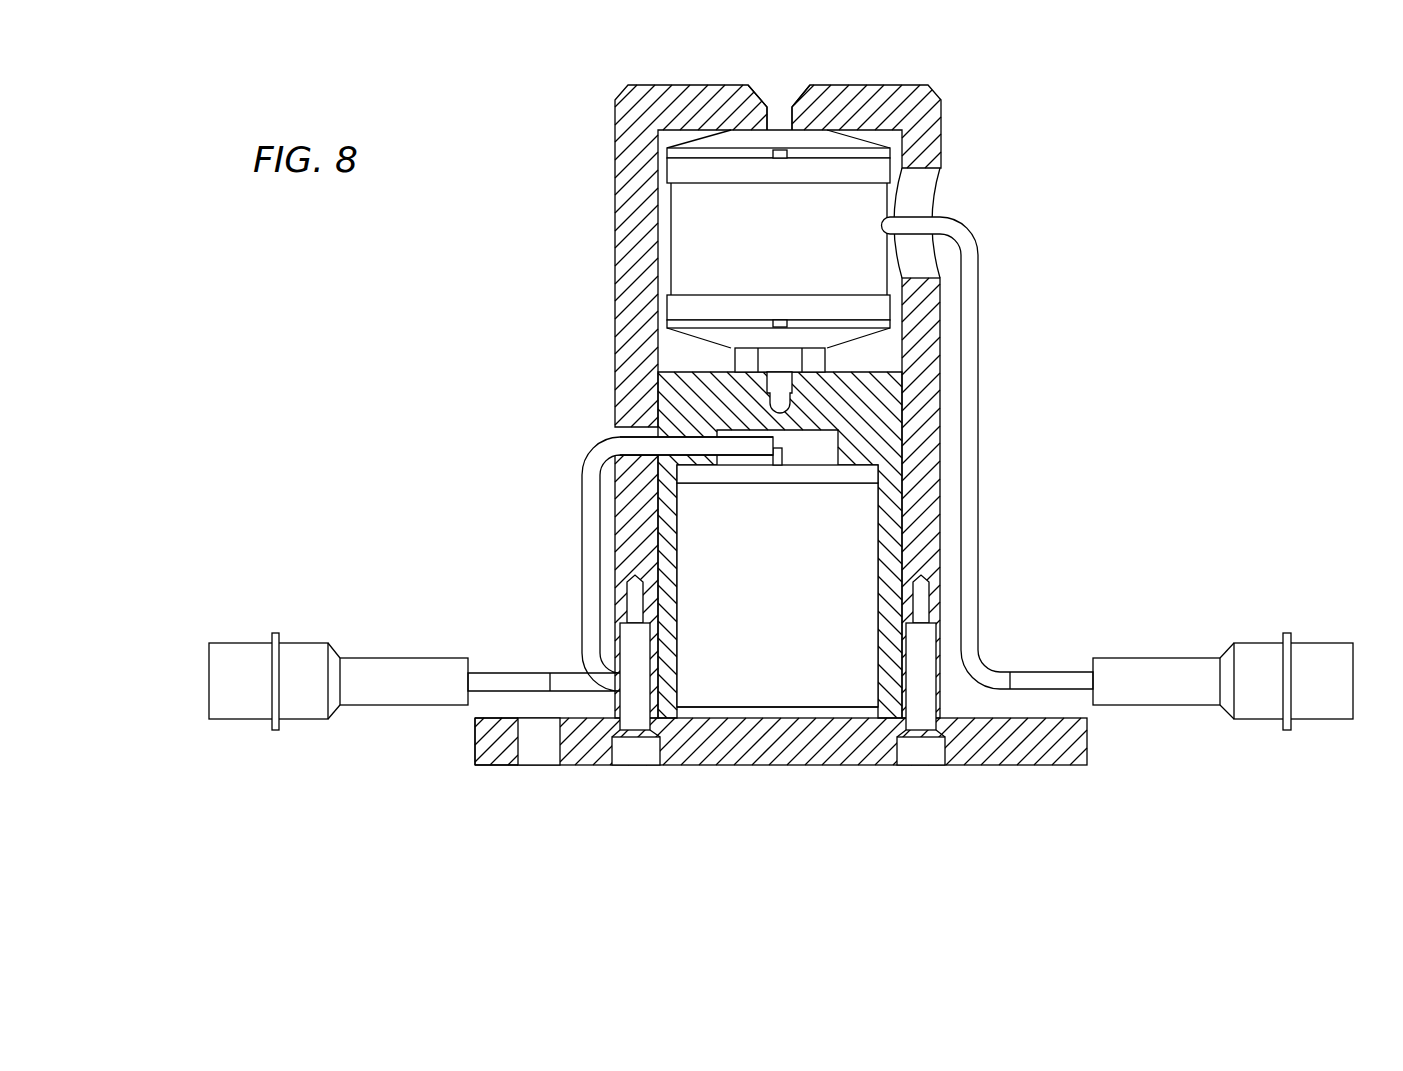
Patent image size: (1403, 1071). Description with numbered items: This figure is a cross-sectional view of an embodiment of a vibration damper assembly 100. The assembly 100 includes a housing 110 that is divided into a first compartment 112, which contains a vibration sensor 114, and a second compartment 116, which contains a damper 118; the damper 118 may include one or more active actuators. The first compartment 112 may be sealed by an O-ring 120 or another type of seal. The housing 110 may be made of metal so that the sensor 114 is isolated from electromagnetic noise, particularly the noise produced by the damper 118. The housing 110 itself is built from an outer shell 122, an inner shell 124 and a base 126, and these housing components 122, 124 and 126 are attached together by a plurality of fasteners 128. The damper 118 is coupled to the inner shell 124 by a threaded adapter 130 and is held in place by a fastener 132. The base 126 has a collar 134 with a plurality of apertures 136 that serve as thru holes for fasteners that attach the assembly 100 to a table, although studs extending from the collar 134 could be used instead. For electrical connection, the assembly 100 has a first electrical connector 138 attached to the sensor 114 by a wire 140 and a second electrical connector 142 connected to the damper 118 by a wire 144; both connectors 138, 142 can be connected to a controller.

The vibration damper assembly 100 is at (1178, 317).
The housing 110 is at (627, 172).
The first compartment 112 is at (737, 482).
The vibration sensor 114 is at (840, 557).
The second compartment 116 is at (677, 353).
The damper 118 is at (853, 202).
The O-ring 120 is at (710, 470).
The outer shell 122 is at (632, 100).
The inner shell 124 is at (873, 425).
The base 126 is at (1013, 748).
The fasteners 128 is at (915, 640).
The threaded adapter 130 is at (818, 358).
The fastener 132 is at (778, 95).
The collar 134 is at (488, 747).
The apertures 136 is at (540, 752).
The first electrical connector 138 is at (392, 673).
The wire 140 is at (582, 620).
The second electrical connector 142 is at (1187, 672).
The wire 144 is at (987, 660).